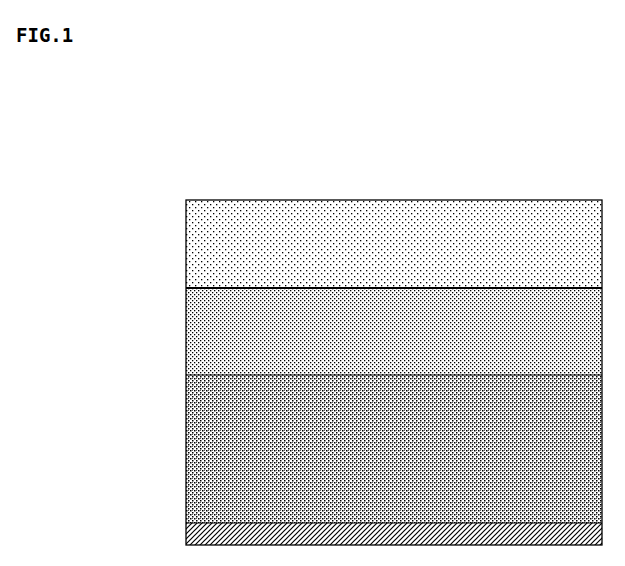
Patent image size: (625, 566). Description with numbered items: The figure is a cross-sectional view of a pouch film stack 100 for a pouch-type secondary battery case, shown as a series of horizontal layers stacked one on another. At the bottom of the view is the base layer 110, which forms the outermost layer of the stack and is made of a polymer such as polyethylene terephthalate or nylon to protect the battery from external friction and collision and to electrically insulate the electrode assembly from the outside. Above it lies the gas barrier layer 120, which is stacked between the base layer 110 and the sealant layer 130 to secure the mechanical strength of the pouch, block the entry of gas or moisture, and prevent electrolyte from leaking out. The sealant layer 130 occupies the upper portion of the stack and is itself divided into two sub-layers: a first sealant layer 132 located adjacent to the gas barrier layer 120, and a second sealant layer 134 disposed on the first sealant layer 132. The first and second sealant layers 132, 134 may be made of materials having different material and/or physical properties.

The pouch film stack 100 is at (557, 169).
The base layer 110 is at (186, 536).
The gas barrier layer 120 is at (186, 455).
The sealant layer 130 is at (100, 221).
The first sealant layer 132 is at (186, 337).
The second sealant layer 134 is at (186, 251).